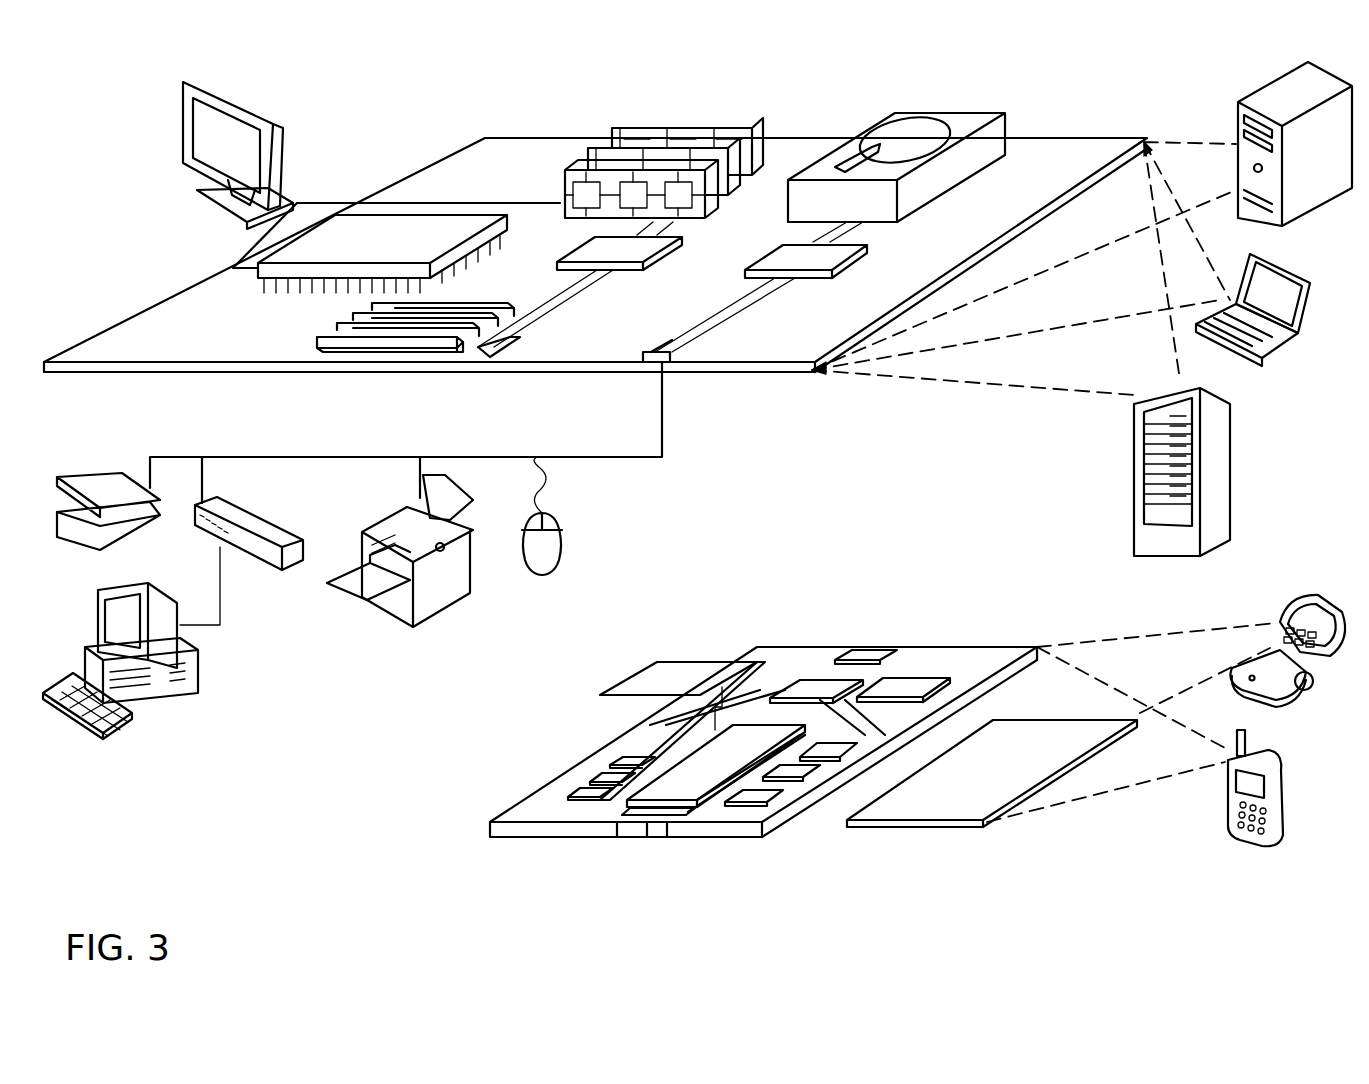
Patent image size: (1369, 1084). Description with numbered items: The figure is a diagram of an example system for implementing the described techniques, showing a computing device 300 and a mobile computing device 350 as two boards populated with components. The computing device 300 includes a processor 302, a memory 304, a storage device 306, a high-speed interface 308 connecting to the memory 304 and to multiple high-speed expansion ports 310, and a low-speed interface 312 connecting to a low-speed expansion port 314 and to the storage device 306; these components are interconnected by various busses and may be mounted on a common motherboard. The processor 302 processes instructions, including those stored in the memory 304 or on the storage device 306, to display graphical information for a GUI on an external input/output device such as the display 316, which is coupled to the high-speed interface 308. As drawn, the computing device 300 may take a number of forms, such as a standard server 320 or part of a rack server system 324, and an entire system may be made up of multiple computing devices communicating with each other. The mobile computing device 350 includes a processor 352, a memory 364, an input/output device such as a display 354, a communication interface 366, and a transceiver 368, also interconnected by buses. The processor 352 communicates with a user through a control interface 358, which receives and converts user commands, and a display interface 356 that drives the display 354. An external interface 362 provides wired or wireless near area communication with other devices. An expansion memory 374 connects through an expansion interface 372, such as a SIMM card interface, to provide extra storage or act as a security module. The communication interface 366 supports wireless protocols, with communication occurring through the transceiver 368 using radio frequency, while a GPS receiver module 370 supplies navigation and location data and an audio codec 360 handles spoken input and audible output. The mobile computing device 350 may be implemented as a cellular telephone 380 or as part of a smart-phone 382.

The computing device 300 is at (400, 100).
The processor 302 is at (258, 268).
The memory 304 is at (630, 150).
The storage device 306 is at (890, 118).
The high-speed interface 308 is at (600, 262).
The high-speed expansion ports 310 is at (322, 340).
The low-speed interface 312 is at (790, 258).
The low-speed expansion port 314 is at (700, 370).
The display 316 is at (183, 84).
The standard server 320 is at (1238, 122).
The rack server system 324 is at (1134, 500).
The mobile computing device 350 is at (462, 828).
The processor 352 is at (686, 790).
The display 354 is at (946, 808).
The display interface 356 is at (780, 800).
The control interface 358 is at (818, 778).
The audio codec 360 is at (840, 750).
The external interface 362 is at (648, 825).
The memory 364 is at (590, 790).
The communication interface 366 is at (818, 685).
The transceiver 368 is at (905, 688).
The GPS receiver module 370 is at (878, 650).
The expansion interface 372 is at (745, 658).
The expansion memory 374 is at (660, 662).
The cellular telephone 380 is at (1280, 610).
The smart-phone 382 is at (1228, 800).